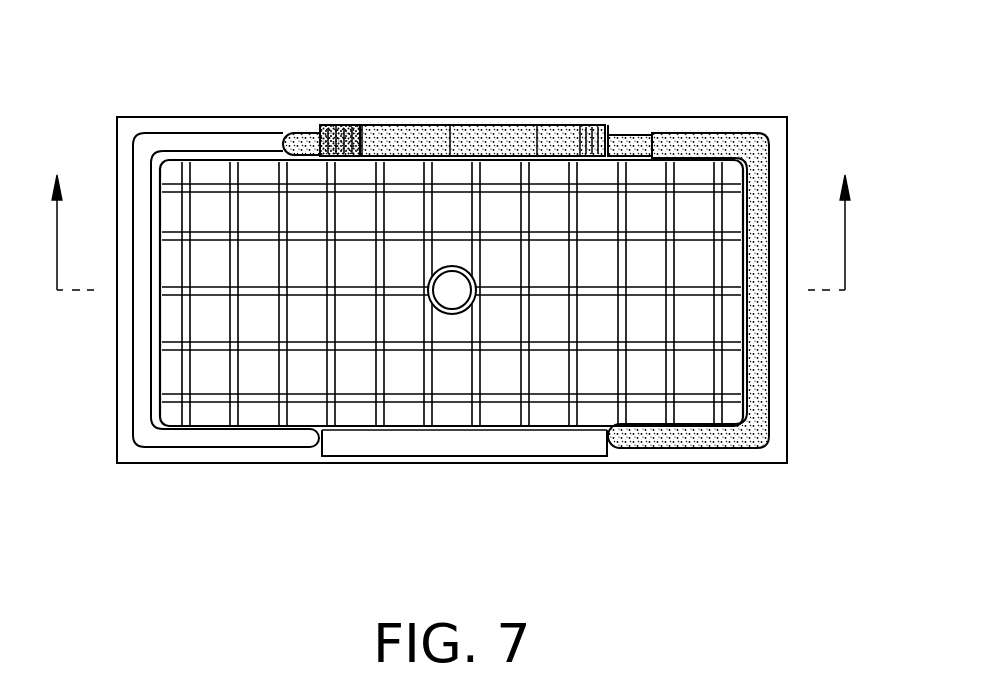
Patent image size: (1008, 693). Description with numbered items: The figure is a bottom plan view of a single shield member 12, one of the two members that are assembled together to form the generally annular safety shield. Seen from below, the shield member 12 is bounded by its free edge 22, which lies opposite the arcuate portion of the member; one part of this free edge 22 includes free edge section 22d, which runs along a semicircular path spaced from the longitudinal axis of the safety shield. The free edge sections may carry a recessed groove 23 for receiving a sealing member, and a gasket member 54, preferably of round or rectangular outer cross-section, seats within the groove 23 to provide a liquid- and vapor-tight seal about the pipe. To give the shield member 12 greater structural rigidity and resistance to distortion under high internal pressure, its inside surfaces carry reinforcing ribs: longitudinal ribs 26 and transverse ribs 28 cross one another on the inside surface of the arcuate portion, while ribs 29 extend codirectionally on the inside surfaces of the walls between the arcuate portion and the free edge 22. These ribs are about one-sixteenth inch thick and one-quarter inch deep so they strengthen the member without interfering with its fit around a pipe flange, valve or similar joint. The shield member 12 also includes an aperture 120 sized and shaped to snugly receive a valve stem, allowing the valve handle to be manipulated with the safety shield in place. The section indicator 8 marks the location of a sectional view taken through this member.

The shield member 12 is at (632, 72).
The section line 8 is at (450, 216).
The free edge 22 is at (768, 372).
The free edge section 22d is at (533, 460).
The recessed groove 23 is at (233, 444).
The longitudinal ribs 26 is at (732, 427).
The transverse ribs 28 is at (722, 326).
The ribs 29 is at (423, 410).
The gasket member 54 is at (430, 138).
The aperture 120 is at (443, 292).